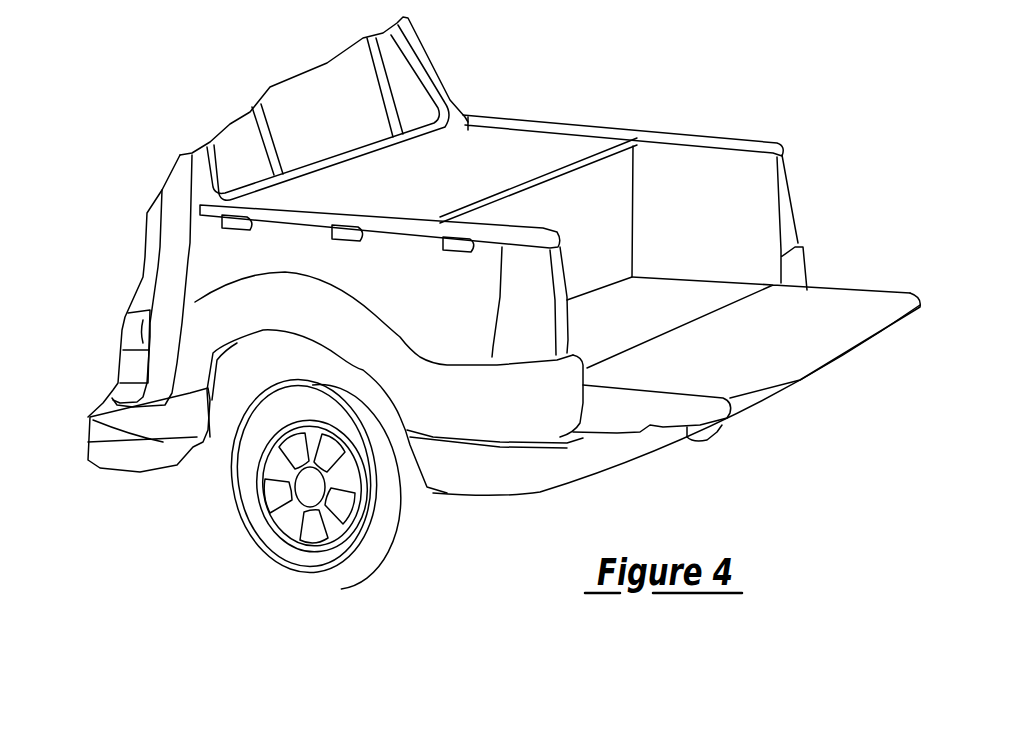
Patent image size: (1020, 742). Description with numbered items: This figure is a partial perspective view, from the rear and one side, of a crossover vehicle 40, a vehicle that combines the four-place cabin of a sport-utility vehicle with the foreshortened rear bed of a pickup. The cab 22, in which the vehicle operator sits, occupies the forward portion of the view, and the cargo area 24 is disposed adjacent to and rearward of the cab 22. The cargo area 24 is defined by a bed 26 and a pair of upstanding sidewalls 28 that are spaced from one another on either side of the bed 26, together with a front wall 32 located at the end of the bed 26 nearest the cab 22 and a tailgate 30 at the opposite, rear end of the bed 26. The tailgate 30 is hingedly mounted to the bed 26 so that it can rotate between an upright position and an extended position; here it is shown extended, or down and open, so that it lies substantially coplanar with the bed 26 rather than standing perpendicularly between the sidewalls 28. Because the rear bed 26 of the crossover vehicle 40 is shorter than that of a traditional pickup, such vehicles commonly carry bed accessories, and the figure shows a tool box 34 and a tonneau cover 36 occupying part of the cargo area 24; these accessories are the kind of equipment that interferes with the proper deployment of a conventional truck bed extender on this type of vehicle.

The crossover vehicle 40 is at (143, 132).
The cab 22 is at (440, 70).
The cargo area 24 is at (662, 103).
The bed 26 is at (647, 320).
The sidewalls 28 is at (743, 136).
The tailgate 30 is at (843, 292).
The front wall 32 is at (445, 100).
The tool box 34 is at (606, 216).
The tonneau cover 36 is at (548, 140).